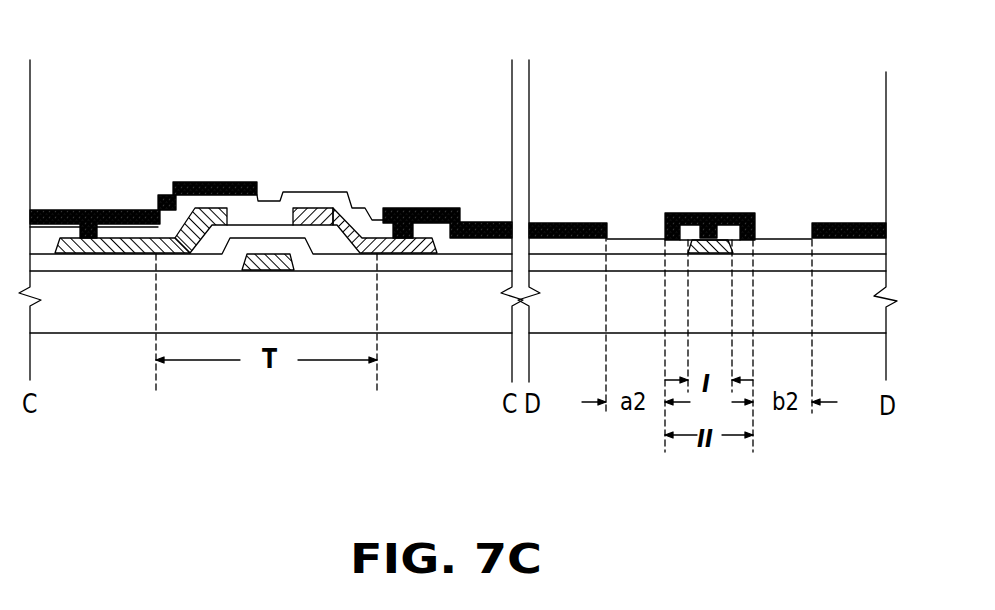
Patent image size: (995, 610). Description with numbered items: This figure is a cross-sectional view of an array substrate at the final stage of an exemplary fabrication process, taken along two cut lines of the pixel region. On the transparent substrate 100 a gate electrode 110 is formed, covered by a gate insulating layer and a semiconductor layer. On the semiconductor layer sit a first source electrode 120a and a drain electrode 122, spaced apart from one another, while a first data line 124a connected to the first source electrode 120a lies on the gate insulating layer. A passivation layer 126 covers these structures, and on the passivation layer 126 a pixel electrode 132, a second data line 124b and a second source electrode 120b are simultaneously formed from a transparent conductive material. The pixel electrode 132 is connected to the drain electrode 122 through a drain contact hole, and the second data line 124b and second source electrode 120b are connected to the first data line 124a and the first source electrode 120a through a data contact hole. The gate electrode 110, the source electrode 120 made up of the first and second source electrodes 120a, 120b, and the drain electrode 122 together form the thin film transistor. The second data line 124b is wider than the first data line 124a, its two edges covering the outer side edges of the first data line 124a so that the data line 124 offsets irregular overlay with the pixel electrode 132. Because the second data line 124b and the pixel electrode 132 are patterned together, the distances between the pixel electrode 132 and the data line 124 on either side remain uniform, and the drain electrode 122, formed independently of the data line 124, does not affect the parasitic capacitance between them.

The transparent substrate 100 is at (290, 308).
The gate electrode 110 is at (275, 254).
The source electrode 120 is at (235, 57).
The first source electrode 120a is at (203, 182).
The second source electrode 120b is at (243, 182).
The drain electrode 122 is at (322, 207).
The data line 124 is at (128, 72).
The first data line 124a is at (71, 238).
The second data line 124b is at (135, 211).
The passivation layer 126 is at (481, 247).
The pixel electrode 132 is at (440, 208).